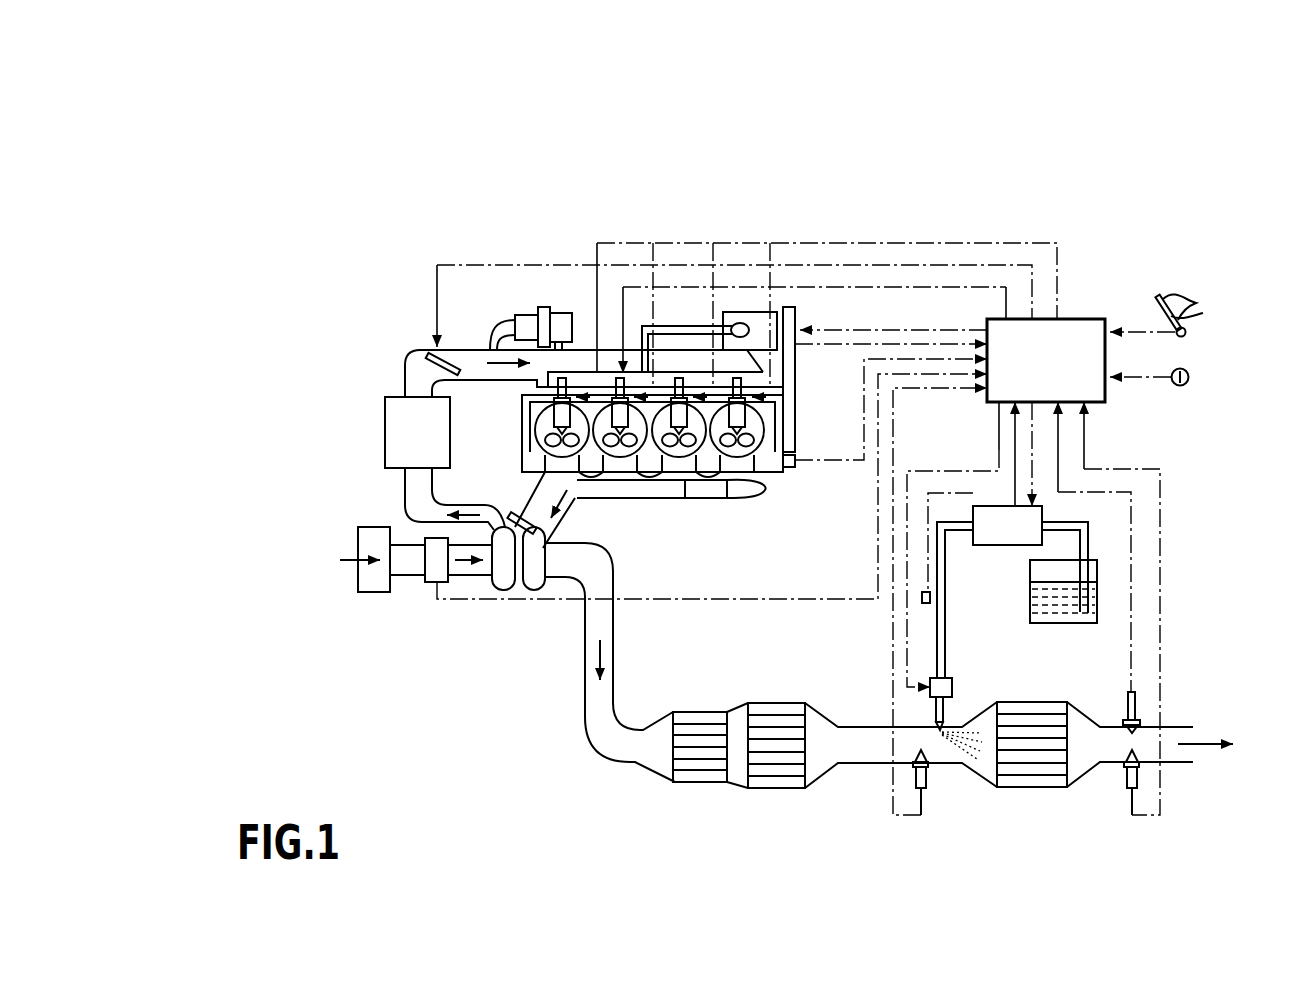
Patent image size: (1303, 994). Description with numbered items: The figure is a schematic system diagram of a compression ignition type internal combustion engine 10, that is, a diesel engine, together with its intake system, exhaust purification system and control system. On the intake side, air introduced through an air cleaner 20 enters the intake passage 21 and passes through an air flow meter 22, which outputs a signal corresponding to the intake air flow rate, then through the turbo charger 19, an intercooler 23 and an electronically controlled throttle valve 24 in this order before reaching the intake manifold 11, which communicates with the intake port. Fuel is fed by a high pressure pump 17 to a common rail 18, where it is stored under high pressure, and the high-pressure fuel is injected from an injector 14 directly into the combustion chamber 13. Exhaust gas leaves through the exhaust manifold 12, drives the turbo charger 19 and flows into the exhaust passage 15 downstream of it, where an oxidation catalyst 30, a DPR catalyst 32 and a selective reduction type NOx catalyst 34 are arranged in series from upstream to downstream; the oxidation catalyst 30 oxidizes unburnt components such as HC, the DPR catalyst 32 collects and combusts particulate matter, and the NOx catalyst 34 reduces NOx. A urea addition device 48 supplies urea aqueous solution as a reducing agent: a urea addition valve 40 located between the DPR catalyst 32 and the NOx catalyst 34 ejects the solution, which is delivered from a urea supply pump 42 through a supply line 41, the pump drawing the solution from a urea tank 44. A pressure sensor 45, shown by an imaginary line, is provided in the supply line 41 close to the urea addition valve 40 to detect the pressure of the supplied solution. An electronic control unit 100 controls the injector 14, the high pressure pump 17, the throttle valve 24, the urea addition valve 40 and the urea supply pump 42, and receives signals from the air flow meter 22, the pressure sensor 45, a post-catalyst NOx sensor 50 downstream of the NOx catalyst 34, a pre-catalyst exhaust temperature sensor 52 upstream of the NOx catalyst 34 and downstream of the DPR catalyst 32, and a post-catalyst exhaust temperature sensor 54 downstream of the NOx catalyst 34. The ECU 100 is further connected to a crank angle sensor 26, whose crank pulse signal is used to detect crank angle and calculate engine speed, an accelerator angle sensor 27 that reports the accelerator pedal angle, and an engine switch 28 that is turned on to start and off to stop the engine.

The internal combustion engine 10 is at (673, 177).
The intake manifold 11 is at (610, 347).
The exhaust manifold 12 is at (747, 485).
The combustion chamber 13 is at (757, 432).
The injector 14 is at (733, 420).
The exhaust passage 15 is at (610, 697).
The high pressure pump 17 is at (740, 310).
The common rail 18 is at (688, 372).
The turbo charger 19 is at (510, 612).
The air cleaner 20 is at (362, 593).
The intake passage 21 is at (408, 553).
The air flow meter 22 is at (420, 590).
The intercooler 23 is at (395, 397).
The throttle valve 24 is at (418, 310).
The crank angle sensor 26 is at (790, 467).
The accelerator angle sensor 27 is at (1183, 337).
The engine switch 28 is at (1186, 385).
The oxidation catalyst 30 is at (702, 773).
The DPR catalyst 32 is at (777, 782).
The NOx catalyst 34 is at (1032, 770).
The urea addition valve 40 is at (952, 693).
The supply line 41 is at (945, 650).
The urea supply pump 42 is at (987, 547).
The urea tank 44 is at (1077, 623).
The pressure sensor 45 is at (922, 598).
The urea addition device 48 is at (1097, 538).
The post-catalyst NOx sensor 50 is at (1128, 697).
The pre-catalyst exhaust temperature sensor 52 is at (928, 773).
The post-catalyst exhaust temperature sensor 54 is at (1125, 778).
The electronic control unit 100 is at (1095, 318).